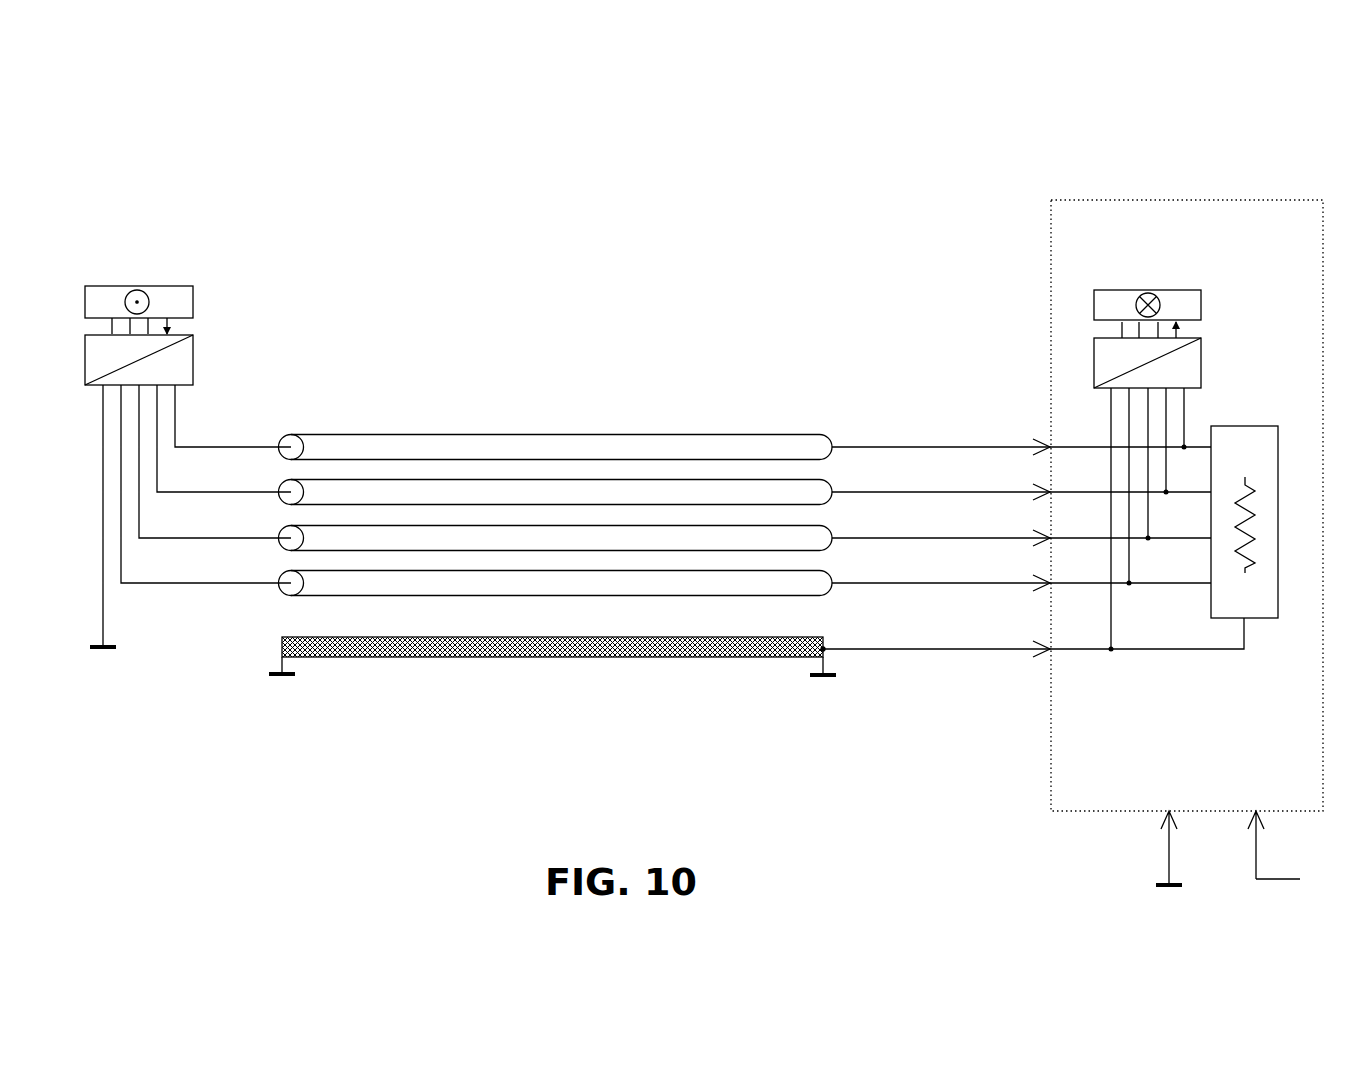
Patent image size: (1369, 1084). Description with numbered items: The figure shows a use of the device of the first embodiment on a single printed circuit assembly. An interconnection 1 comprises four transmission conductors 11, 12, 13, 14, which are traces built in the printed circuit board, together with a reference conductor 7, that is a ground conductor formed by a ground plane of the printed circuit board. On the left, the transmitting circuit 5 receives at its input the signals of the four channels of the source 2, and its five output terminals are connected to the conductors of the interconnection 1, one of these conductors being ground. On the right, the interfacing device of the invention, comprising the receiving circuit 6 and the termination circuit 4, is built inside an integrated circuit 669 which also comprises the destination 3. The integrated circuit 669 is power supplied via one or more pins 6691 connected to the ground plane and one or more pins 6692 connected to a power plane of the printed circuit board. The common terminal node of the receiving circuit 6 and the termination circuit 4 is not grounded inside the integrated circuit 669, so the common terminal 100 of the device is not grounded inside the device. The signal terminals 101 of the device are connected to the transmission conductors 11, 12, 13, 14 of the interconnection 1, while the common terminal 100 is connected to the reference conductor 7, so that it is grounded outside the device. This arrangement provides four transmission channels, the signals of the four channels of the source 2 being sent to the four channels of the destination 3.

The interconnection 1 is at (585, 461).
The source 2 is at (142, 283).
The destination 3 is at (1148, 280).
The termination circuit 4 is at (1242, 418).
The transmitting circuit 5 is at (199, 367).
The receiving circuit 6 is at (1203, 367).
The reference conductor 7 is at (533, 675).
The transmission conductor 11 is at (830, 433).
The transmission conductor 12 is at (833, 480).
The transmission conductor 13 is at (833, 526).
The transmission conductor 14 is at (833, 572).
The common terminal 100 is at (1027, 643).
The signal terminals 101 is at (1027, 442).
The integrated circuit 669 is at (1320, 185).
The pins 6691 is at (1148, 828).
The pins 6692 is at (1273, 828).